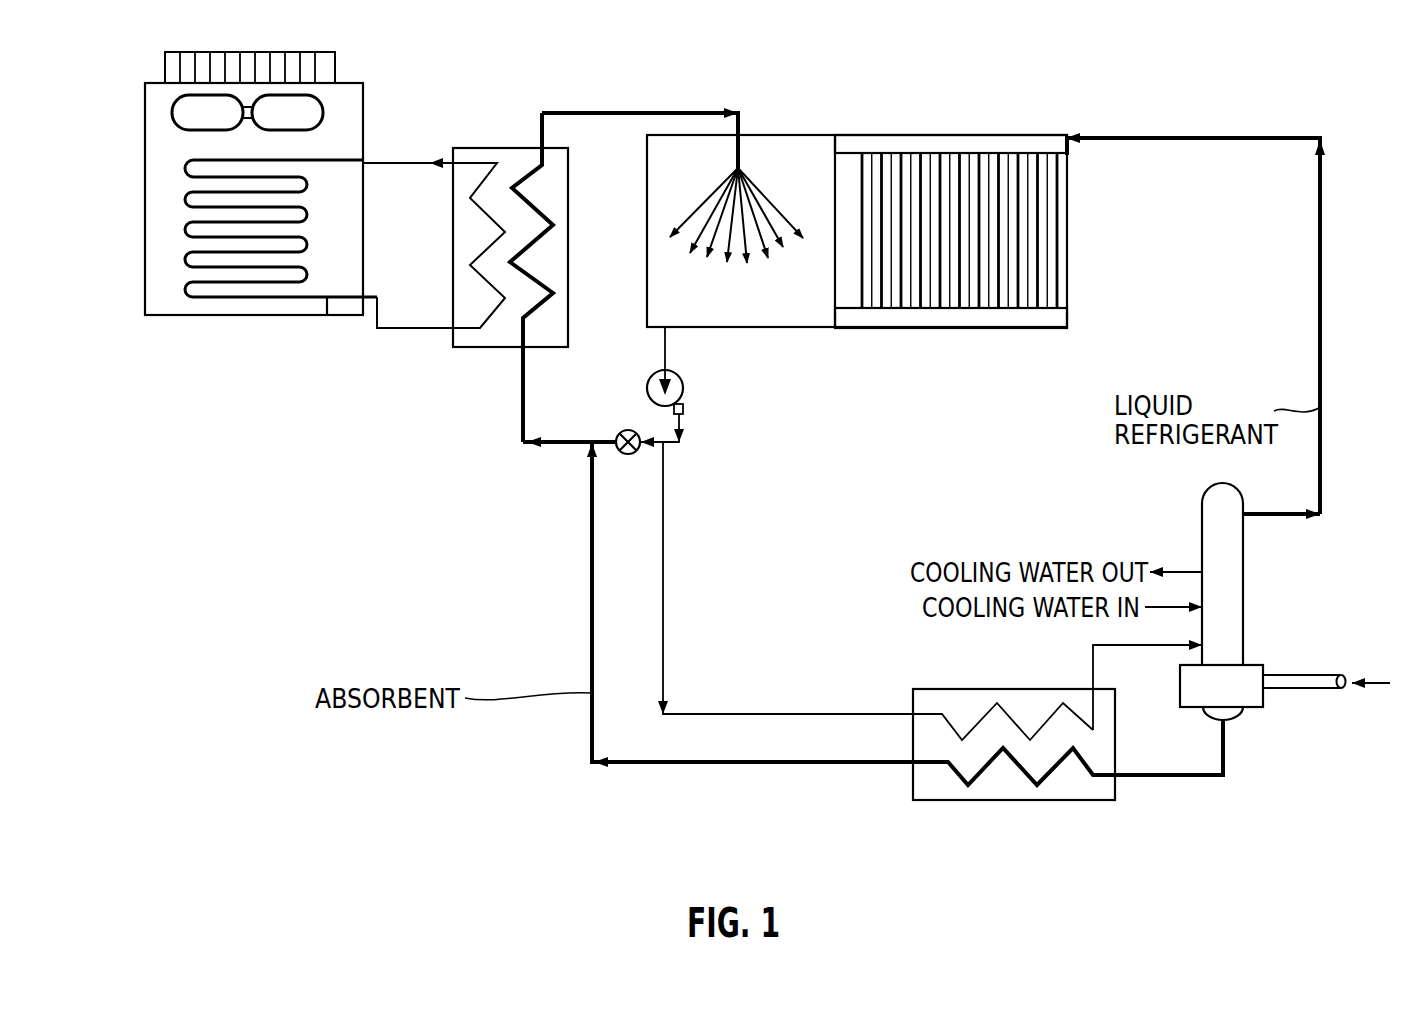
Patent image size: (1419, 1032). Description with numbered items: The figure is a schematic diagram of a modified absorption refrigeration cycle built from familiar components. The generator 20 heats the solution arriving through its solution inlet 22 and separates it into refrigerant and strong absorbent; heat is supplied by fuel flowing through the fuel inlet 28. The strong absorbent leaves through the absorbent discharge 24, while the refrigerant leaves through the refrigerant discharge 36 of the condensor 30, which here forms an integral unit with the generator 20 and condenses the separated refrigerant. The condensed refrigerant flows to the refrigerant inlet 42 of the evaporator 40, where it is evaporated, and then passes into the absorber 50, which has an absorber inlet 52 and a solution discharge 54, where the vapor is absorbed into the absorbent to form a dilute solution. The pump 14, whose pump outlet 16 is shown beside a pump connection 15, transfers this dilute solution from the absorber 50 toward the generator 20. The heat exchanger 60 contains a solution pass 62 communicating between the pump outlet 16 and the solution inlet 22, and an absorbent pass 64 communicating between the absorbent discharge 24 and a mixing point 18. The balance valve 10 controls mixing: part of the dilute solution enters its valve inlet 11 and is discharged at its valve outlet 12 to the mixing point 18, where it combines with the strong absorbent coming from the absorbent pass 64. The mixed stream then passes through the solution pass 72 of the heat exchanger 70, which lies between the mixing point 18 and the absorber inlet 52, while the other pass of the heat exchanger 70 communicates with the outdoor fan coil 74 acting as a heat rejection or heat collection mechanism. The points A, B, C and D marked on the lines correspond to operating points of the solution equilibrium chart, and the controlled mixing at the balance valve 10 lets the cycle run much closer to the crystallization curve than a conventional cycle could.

The balance valve 10 is at (625, 455).
The valve inlet 11 is at (650, 417).
The valve outlet 12 is at (615, 440).
The pump 14 is at (687, 385).
The pump inlet 15 is at (646, 381).
The pump outlet 16 is at (687, 427).
The mixing point 18 is at (595, 438).
The generator 20 is at (1230, 623).
The solution inlet 22 is at (1090, 672).
The absorbent discharge 24 is at (1232, 762).
The fuel inlet 28 is at (1295, 680).
The condensor 30 is at (1202, 514).
The refrigerant discharge 36 is at (1302, 518).
The evaporator 40 is at (1025, 145).
The refrigerant inlet 42 is at (1137, 136).
The absorber 50 is at (820, 305).
The absorber inlet 52 is at (748, 128).
The solution discharge 54 is at (668, 348).
The heat exchanger 60 is at (1027, 800).
The solution pass 62 is at (1008, 717).
The absorbent pass 64 is at (955, 772).
The heat exchanger 70 is at (485, 148).
The solution pass 72 is at (568, 330).
The outdoor fan coil 74 is at (327, 318).
The point A is at (1125, 650).
The point B is at (1232, 722).
The point C is at (592, 560).
The point D is at (661, 333).